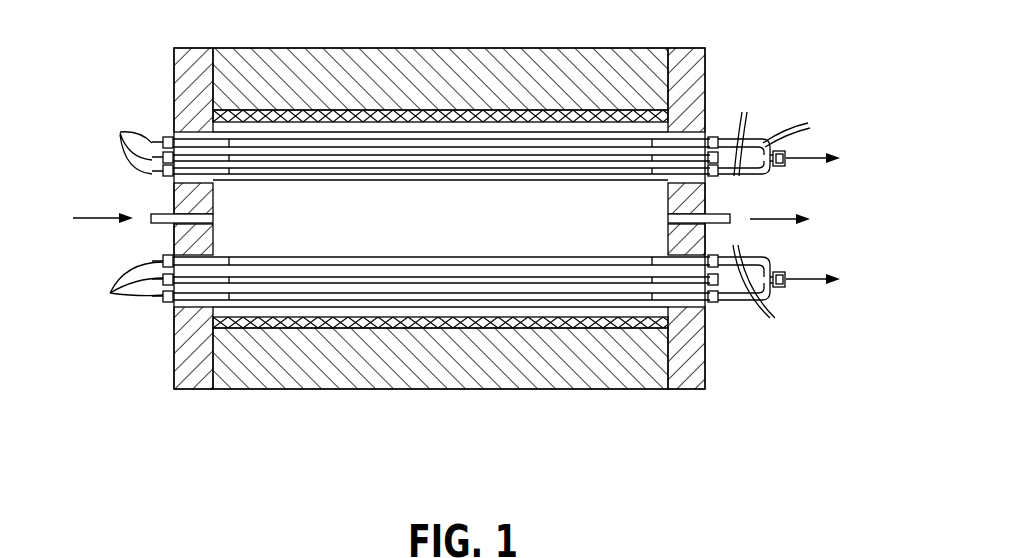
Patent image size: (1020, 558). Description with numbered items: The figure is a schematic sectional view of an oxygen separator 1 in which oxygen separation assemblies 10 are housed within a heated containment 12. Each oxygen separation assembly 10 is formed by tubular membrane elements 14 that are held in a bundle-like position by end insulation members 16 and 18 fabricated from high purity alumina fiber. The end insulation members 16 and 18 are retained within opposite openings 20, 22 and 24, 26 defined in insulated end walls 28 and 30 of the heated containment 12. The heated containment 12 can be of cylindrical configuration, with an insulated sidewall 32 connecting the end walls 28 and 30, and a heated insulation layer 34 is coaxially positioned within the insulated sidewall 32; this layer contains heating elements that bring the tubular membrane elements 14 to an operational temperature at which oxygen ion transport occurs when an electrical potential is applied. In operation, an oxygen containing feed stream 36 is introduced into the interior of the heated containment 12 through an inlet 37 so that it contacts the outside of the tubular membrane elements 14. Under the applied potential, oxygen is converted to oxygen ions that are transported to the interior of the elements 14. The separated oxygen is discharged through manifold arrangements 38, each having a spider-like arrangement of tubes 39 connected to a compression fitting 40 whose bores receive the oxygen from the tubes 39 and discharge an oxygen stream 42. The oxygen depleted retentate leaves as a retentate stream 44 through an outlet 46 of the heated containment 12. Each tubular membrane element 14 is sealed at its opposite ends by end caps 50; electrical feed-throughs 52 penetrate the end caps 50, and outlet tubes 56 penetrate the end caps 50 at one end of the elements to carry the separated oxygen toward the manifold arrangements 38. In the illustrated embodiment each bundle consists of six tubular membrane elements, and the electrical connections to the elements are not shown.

The oxygen separator 1 is at (546, 417).
The oxygen separation assemblies 10 is at (267, 122).
The heated containment 12 is at (434, 396).
The tubular membrane elements 14 is at (332, 158).
The end insulation member 16 is at (192, 145).
The end insulation member 18 is at (690, 135).
The opening 20 is at (208, 258).
The opening 22 is at (207, 188).
The opening 24 is at (697, 307).
The opening 26 is at (680, 128).
The insulated end wall 28 is at (188, 374).
The insulated end wall 30 is at (698, 378).
The insulated sidewall 32 is at (536, 70).
The heated insulation layer 34 is at (380, 323).
The oxygen containing feed stream 36 is at (98, 223).
The inlet 37 is at (163, 225).
The manifold arrangement 38 is at (765, 130).
The tubes 39 is at (752, 175).
The compression fitting 40 is at (778, 167).
The oxygen stream 42 is at (812, 156).
The retentate stream 44 is at (785, 218).
The outlet 46 is at (720, 214).
The end caps 50 is at (162, 140).
The electrical feed-throughs 52 is at (125, 210).
The outlet tubes 56 is at (746, 205).